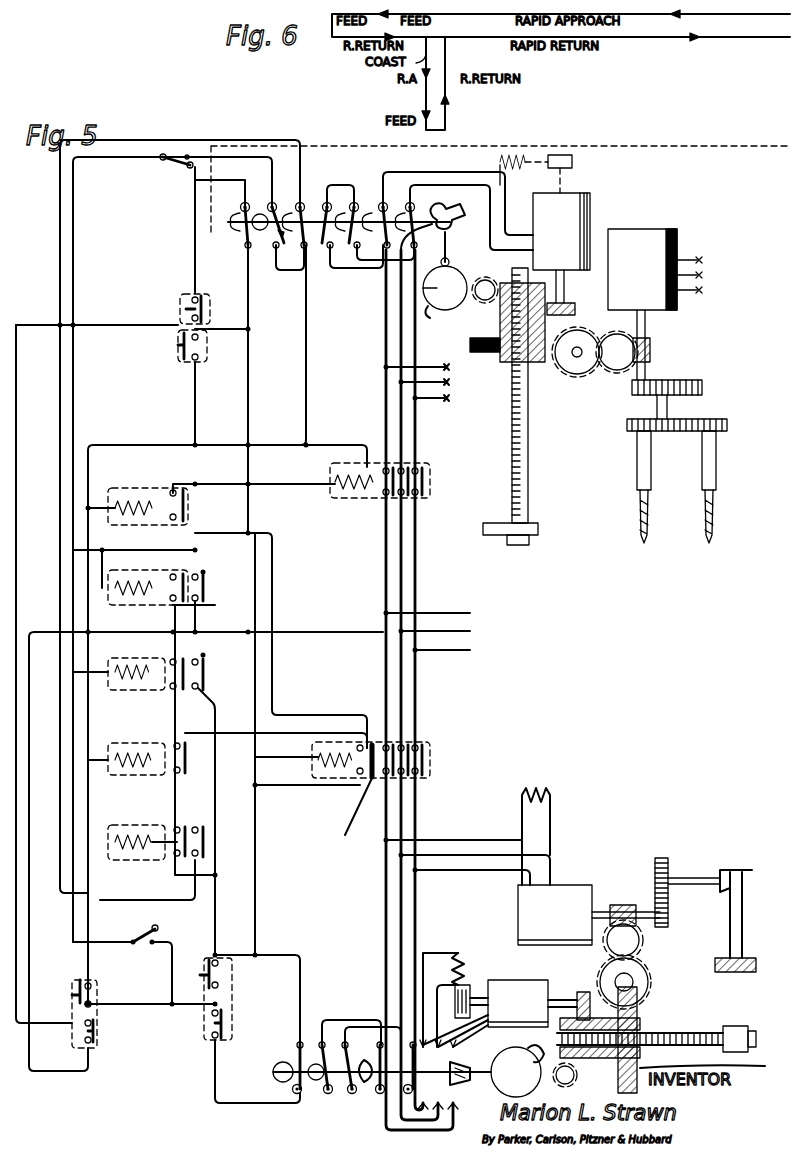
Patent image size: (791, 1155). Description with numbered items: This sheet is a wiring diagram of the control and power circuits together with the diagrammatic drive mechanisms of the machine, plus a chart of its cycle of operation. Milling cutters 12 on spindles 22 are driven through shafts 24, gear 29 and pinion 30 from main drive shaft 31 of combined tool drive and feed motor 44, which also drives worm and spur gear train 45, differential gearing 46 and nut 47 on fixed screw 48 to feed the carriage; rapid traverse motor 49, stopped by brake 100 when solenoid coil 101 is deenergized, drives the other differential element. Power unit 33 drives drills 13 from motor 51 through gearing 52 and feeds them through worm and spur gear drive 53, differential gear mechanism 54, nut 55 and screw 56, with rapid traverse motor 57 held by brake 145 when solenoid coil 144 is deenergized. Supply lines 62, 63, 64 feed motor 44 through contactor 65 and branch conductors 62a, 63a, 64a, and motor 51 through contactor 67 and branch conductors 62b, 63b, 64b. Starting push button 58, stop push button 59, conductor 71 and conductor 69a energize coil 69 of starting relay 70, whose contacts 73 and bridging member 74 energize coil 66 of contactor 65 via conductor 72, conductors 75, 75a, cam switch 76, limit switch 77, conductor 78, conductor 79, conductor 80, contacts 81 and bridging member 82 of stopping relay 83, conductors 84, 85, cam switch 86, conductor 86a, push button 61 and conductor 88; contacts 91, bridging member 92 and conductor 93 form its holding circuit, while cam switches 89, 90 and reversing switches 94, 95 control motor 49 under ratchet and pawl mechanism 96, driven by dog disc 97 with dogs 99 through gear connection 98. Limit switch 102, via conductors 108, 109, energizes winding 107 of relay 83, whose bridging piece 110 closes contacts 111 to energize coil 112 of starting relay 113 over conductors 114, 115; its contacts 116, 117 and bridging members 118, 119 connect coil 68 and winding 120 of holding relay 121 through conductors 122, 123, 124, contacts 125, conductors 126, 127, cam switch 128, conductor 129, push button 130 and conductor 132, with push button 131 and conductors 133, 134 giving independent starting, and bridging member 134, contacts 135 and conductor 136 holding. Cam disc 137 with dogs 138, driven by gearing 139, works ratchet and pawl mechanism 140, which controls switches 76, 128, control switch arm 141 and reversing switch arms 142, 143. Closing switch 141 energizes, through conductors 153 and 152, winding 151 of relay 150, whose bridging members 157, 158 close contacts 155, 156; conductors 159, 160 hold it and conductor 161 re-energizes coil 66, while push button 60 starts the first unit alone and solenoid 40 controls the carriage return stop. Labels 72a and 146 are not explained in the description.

The face type milling cutters 12 is at (715, 962).
The drills 13 is at (640, 524).
The spindles 22 is at (730, 919).
The horizontal shafts 24 is at (696, 878).
The gear 29 is at (655, 866).
The pinion 30 is at (662, 915).
The main drive shaft 31 is at (636, 906).
The power unit 33 is at (308, 146).
The solenoid 40 is at (552, 797).
The combined tool drive and feed motor 44 is at (585, 886).
The worm and spur gear train 45 is at (652, 960).
The differential gearing 46 is at (600, 977).
The nut 47 is at (640, 1027).
The elongated screw 48 is at (700, 1033).
The rapid traverse motor 49 is at (535, 980).
The combined tool drive and feed motor 51 is at (678, 236).
The gearing 52 is at (690, 370).
The worm and spur gear drive 53 is at (594, 380).
The differential gear mechanism 54 is at (596, 326).
The nut 55 is at (500, 330).
The screw 56 is at (512, 494).
The rapid traverse motor 57 is at (590, 214).
The starting push button 58 is at (80, 986).
The stop push button 59 is at (82, 1043).
The push button 60 is at (205, 981).
The push button 61 is at (212, 1027).
The power supply line 62 is at (475, 613).
The power supply line 63 is at (475, 631).
The power supply line 64 is at (475, 650).
The branch conductor 62a is at (486, 840).
The branch conductor 63a is at (518, 840).
The branch conductor 64a is at (496, 873).
The branch conductor 62b is at (450, 367).
The branch conductor 63b is at (450, 382).
The branch conductor 64b is at (450, 397).
The contactor 65 is at (438, 752).
The actuating coil 66 is at (318, 750).
The contactor 67 is at (438, 480).
The actuating coil 68 is at (360, 497).
The actuating coil 69 is at (133, 745).
The conductor 69a is at (92, 816).
The starting relay 70 is at (153, 779).
The conductor 71 is at (349, 632).
The conductor 72 is at (340, 468).
The conductor 72a is at (156, 723).
The contacts 73 is at (188, 757).
The bridging member 74 is at (188, 770).
The conductor 75 is at (306, 428).
The conductor 75a is at (284, 272).
The cam switch 76 is at (285, 234).
The limit switch 77 is at (165, 182).
The conductor 78 is at (98, 158).
The conductor 79 is at (328, 782).
The conductor 80 is at (175, 732).
The contacts 81 is at (180, 691).
The bridging member 82 is at (174, 658).
The stopping relay 83 is at (118, 702).
The conductor 84 is at (214, 820).
The conductor 85 is at (242, 955).
The cam switch 86 is at (296, 1063).
The conductor 86a is at (272, 1098).
The conductor 88 is at (139, 1006).
The cam switch 89 is at (366, 1088).
The cam switch 90 is at (393, 1097).
The contacts 91 is at (358, 740).
The bridging member 92 is at (370, 745).
The conductor 93 is at (310, 732).
The reversing switch member 94 is at (325, 1096).
The reversing switch member 95 is at (348, 1098).
The ratchet and pawl mechanism 96 is at (460, 1096).
The dog disc 97 is at (527, 1092).
The gear connection 98 is at (575, 1077).
The dogs 99 is at (507, 1064).
The brake 100 is at (466, 990).
The solenoid operating coil 101 is at (465, 964).
The limit switch 102 is at (140, 962).
The actuating winding 107 is at (108, 665).
The conductor 108 is at (74, 702).
The conductor 109 is at (172, 974).
The bridging piece 110 is at (208, 665).
The contacts 111 is at (203, 674).
The actuating coil 112 is at (129, 605).
The starting relay 113 is at (138, 575).
The conductor 114 is at (102, 574).
The conductor 115 is at (196, 607).
The contacts 116 is at (170, 578).
The contacts 117 is at (198, 595).
The bridging member 118 is at (200, 572).
The bridging member 119 is at (200, 580).
The actuating winding 120 is at (119, 523).
The holding relay 121 is at (143, 482).
The conductor 122 is at (294, 488).
The conductor 123 is at (190, 511).
The conductor 124 is at (232, 606).
The contacts 125 is at (360, 805).
The conductor 126 is at (274, 692).
The conductor 127 is at (246, 264).
The cam switch 128 is at (242, 238).
The conductor 129 is at (193, 240).
The stop push button 130 is at (168, 300).
The starting push button 131 is at (178, 344).
The conductor 132 is at (176, 312).
The conductor 133 is at (203, 398).
The conductor 134 is at (205, 332).
The contacts 135 is at (172, 522).
The conductor 136 is at (245, 535).
The cam disc 137 is at (462, 280).
The dogs 138 is at (430, 308).
The gearing 139 is at (491, 280).
The ratchet and pawl mechanism 140 is at (436, 214).
The control switch arm 141 is at (312, 205).
The reversing switch arm 142 is at (334, 268).
The reversing switch arms 143 is at (368, 258).
The solenoid brake releasing coil 144 is at (500, 159).
The brake 145 is at (546, 153).
The switch 146 is at (192, 184).
The relay 150 is at (140, 826).
The actuating winding 151 is at (131, 860).
The conductor 152 is at (169, 876).
The conductor 153 is at (112, 890).
The contacts 155 is at (205, 868).
The contacts 156 is at (188, 845).
The bridging member 157 is at (205, 860).
The bridging member 158 is at (205, 833).
The conductor 159 is at (160, 905).
The conductor 160 is at (197, 827).
The conductor 161 is at (174, 802).